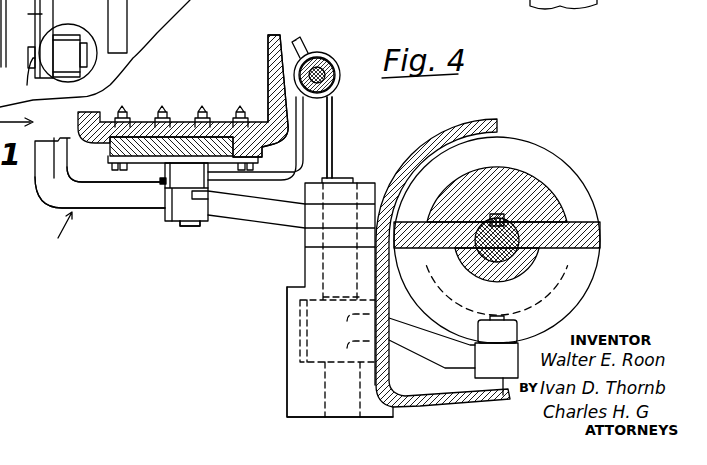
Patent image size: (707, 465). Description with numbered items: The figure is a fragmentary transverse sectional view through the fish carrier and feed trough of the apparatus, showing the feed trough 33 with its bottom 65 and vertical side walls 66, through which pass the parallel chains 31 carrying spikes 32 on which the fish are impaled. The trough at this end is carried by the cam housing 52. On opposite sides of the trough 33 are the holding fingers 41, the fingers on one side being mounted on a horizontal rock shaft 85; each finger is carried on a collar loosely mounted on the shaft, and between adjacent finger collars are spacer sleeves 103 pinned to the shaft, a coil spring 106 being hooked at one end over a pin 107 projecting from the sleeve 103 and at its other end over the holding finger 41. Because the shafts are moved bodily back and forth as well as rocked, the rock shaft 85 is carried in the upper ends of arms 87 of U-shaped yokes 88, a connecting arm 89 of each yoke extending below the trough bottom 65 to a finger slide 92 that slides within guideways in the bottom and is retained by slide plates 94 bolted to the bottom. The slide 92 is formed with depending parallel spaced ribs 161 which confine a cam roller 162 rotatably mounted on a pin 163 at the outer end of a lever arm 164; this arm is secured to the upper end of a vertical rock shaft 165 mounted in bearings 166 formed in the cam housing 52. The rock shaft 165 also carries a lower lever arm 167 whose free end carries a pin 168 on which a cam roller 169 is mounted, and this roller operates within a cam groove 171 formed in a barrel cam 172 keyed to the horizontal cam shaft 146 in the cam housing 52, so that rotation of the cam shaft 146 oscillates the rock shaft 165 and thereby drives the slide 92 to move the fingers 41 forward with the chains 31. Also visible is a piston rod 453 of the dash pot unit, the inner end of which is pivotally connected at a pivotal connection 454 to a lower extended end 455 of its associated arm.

The chains 31 is at (127, 117).
The spikes 32 is at (163, 117).
The feed trough 33 is at (263, 90).
The holding fingers 41 is at (302, 41).
The cam housing 52 is at (460, 410).
The bottom 65 is at (262, 149).
The vertical side walls 66 is at (275, 35).
The rock shaft 85 is at (315, 70).
The arms 87 is at (52, 182).
The U-shaped yokes 88 is at (59, 235).
The connecting arm 89 is at (118, 203).
The finger slide 92 is at (112, 158).
The slide plates 94 is at (140, 164).
The spacer sleeves 103 is at (338, 65).
The coil spring 106 is at (336, 89).
The pin 107 is at (296, 88).
The cam shaft 146 is at (512, 224).
The ribs 161 is at (160, 184).
The cam roller 162 is at (186, 194).
The pin 163 is at (190, 227).
The lever arm 164 is at (264, 214).
The vertical rock shaft 165 is at (343, 182).
The bearings 166 is at (303, 376).
The lower lever arm 167 is at (422, 352).
The pin 168 is at (497, 382).
The cam roller 169 is at (487, 342).
The cam groove 171 is at (556, 149).
The barrel cam 172 is at (594, 233).
The piston rod 453 is at (73, 68).
The pivotal connection 454 is at (20, 79).
The lower extended end 455 is at (24, 16).